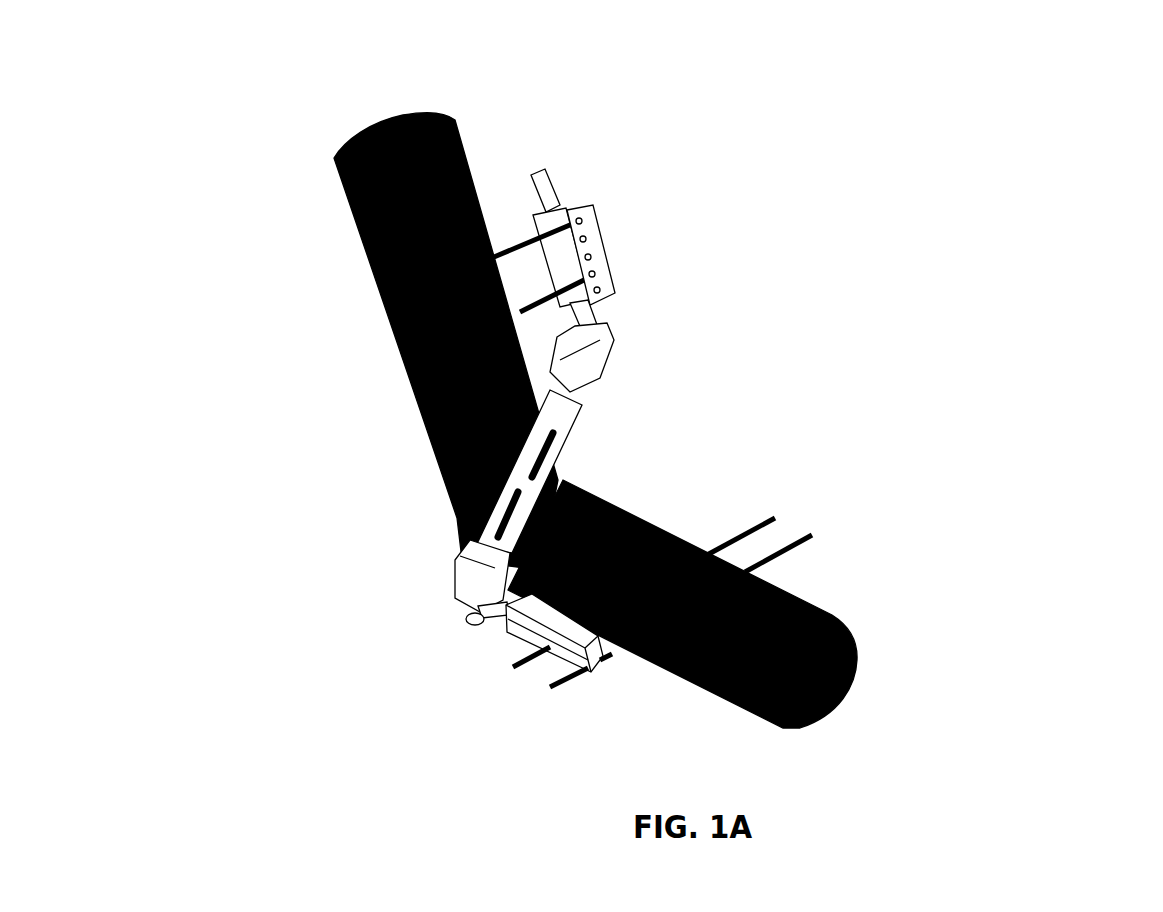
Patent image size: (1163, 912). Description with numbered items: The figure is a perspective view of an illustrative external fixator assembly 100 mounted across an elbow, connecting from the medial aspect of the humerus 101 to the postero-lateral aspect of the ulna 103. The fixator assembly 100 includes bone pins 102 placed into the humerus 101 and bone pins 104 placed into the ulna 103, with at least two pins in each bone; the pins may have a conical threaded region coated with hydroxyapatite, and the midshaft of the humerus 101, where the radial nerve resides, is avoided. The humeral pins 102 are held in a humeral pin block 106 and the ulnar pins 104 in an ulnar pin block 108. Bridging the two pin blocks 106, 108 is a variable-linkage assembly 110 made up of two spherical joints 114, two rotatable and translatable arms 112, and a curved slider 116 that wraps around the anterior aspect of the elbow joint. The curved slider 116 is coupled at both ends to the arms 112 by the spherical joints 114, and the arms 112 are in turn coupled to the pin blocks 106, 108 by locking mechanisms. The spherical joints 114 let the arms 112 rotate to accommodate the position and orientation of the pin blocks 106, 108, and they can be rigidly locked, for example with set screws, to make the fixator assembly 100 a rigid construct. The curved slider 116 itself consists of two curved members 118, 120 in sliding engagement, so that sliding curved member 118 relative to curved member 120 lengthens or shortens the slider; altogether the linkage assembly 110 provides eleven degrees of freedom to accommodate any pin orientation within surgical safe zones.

The fixator assembly 100 is at (746, 348).
The humerus 101 is at (403, 372).
The bone pins 102 is at (536, 229).
The ulna 103 is at (733, 703).
The bone pins 104 is at (793, 550).
The humeral pin block 106 is at (608, 256).
The ulnar pin block 108 is at (523, 648).
The variable-linkage assembly 110 is at (592, 467).
The rotatable and translatable arms 112 is at (547, 187).
The spherical joints 114 is at (460, 615).
The curved slider 116 is at (437, 470).
The curved member 118 is at (490, 537).
The curved member 120 is at (572, 418).